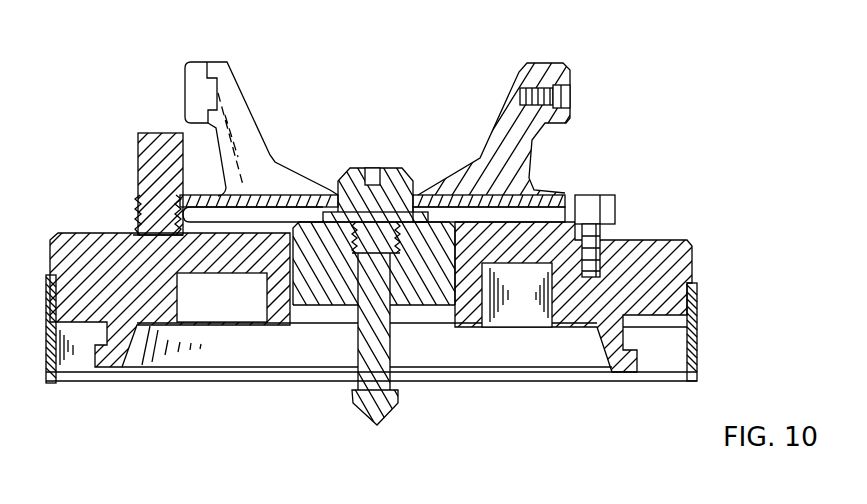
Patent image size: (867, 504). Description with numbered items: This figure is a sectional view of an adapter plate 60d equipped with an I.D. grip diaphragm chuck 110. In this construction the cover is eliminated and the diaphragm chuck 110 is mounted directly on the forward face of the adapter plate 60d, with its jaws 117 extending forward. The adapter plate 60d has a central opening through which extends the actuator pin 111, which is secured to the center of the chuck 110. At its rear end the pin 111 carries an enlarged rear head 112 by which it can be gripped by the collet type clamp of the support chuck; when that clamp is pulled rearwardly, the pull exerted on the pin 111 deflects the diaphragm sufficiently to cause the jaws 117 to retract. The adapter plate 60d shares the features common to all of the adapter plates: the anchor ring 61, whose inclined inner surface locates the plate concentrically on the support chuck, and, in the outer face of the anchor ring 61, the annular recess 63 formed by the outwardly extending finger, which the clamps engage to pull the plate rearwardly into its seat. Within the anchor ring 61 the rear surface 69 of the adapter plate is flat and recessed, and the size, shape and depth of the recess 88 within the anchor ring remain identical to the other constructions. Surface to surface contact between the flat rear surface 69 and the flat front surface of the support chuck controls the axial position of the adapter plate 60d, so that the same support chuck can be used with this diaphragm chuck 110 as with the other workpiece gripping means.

The adapter plate 60d is at (660, 238).
The jaws 117 is at (257, 122).
The I.D. diaphragm chuck 110 is at (600, 123).
The anchor ring 61 is at (104, 376).
The recess 88 is at (211, 352).
The actuator pin 111 is at (357, 347).
The rear head 112 is at (390, 413).
The rear surface 69 is at (560, 333).
The annular recess 63 is at (637, 333).